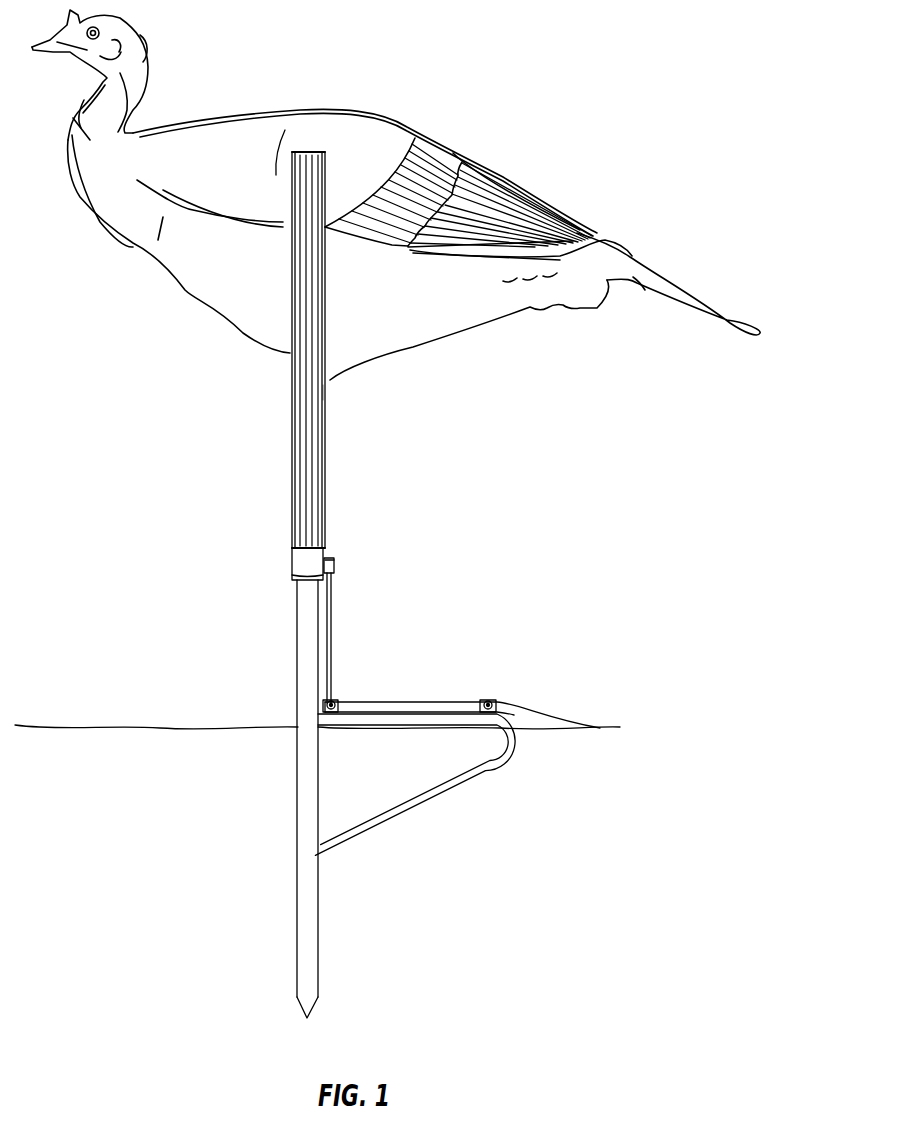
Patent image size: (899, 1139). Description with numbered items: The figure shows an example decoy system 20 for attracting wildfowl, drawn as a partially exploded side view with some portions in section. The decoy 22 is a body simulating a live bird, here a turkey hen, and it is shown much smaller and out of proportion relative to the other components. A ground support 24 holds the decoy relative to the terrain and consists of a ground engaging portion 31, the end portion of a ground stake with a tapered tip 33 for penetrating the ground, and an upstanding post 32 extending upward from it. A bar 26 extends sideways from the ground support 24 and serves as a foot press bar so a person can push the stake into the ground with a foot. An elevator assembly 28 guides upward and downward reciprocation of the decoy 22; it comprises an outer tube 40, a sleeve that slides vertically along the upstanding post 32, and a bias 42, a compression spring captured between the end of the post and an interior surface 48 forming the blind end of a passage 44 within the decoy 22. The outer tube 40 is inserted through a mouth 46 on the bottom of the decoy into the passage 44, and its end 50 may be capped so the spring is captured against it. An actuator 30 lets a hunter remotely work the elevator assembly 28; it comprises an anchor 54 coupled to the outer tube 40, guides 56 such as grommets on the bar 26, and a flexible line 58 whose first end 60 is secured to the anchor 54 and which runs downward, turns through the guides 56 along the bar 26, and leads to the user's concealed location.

The decoy system 20 is at (576, 120).
The decoy 22 is at (218, 118).
The ground support 24 is at (297, 657).
The bar 26 is at (530, 743).
The elevator assembly 28 is at (293, 333).
The actuator 30 is at (330, 637).
The ground engaging portion 31 is at (298, 820).
The upstanding post 32 is at (297, 645).
The tapered tip 33 is at (300, 1010).
The outer tube 40 is at (292, 440).
The bias 42 is at (292, 275).
The passage 44 is at (327, 344).
The mouth 46 is at (324, 393).
The interior surface 48 is at (300, 148).
The end of outer tube 50 is at (327, 153).
The anchor 54 is at (332, 558).
The guides 56 is at (334, 702).
The flexible line 58 is at (568, 721).
The first end 60 is at (334, 578).